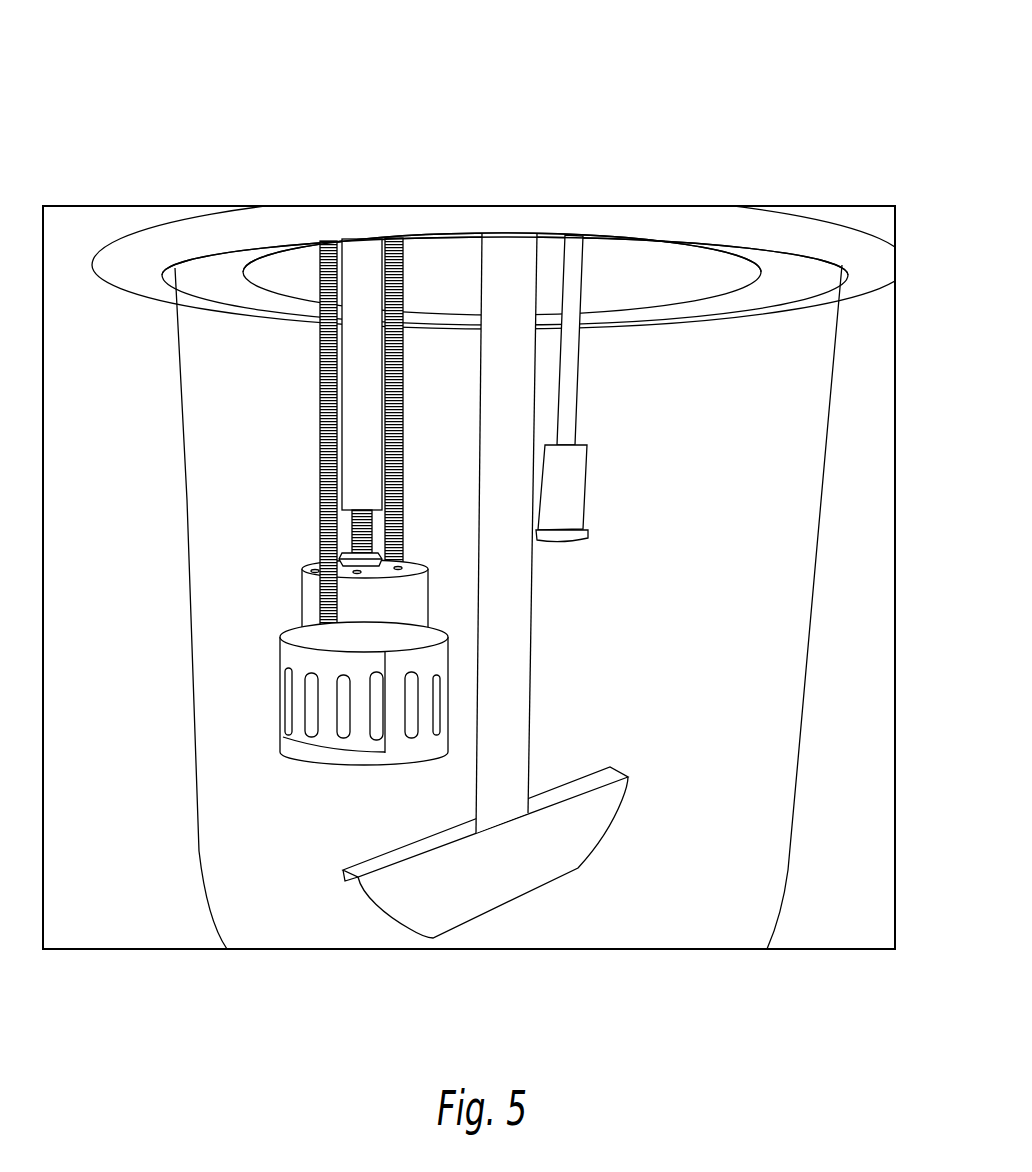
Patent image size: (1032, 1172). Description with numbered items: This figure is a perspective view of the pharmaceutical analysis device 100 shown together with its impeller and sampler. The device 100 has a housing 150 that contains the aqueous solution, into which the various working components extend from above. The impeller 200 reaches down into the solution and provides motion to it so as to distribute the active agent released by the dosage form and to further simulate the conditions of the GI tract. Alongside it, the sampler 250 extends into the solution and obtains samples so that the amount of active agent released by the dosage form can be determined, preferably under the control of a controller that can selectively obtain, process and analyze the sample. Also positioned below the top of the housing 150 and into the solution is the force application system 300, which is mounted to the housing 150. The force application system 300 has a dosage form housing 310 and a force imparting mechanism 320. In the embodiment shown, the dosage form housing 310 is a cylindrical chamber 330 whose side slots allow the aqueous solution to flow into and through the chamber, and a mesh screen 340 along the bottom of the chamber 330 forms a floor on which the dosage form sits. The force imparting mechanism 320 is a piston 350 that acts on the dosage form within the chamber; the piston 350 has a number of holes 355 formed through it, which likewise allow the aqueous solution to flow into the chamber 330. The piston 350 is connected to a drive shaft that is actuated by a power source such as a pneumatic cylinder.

The pharmaceutical analysis device 100 is at (744, 76).
The housing 150 is at (199, 852).
The impeller 200 is at (522, 858).
The sampler 250 is at (568, 492).
The force application system 300 is at (341, 548).
The dosage form housing 310 is at (281, 740).
The force imparting mechanism 320 is at (405, 593).
The cylindrical chamber 330 is at (294, 663).
The mesh screen 340 is at (352, 753).
The piston 350 is at (312, 583).
The holes 355 is at (312, 720).